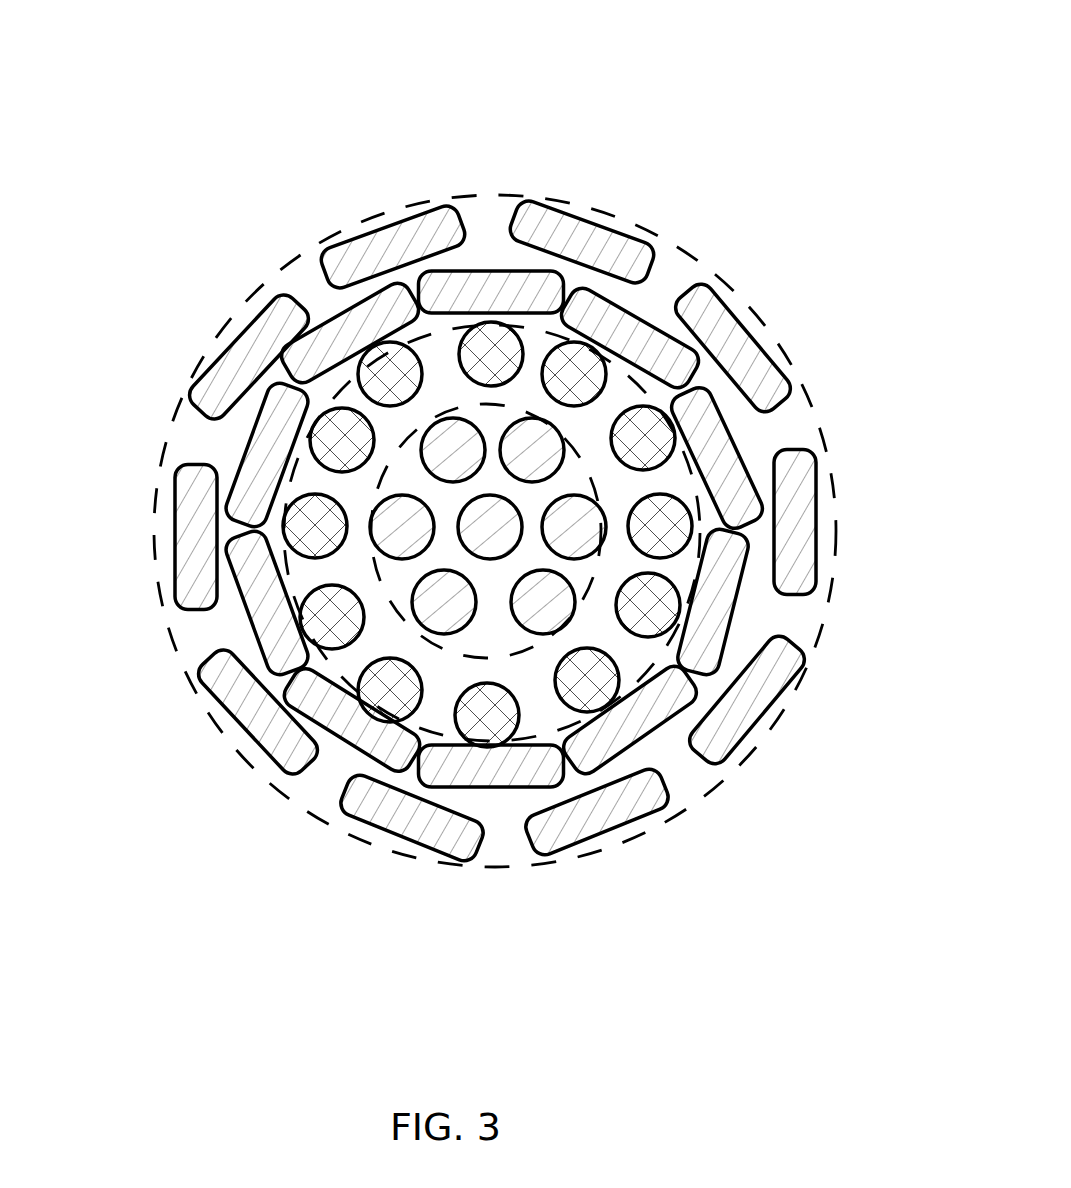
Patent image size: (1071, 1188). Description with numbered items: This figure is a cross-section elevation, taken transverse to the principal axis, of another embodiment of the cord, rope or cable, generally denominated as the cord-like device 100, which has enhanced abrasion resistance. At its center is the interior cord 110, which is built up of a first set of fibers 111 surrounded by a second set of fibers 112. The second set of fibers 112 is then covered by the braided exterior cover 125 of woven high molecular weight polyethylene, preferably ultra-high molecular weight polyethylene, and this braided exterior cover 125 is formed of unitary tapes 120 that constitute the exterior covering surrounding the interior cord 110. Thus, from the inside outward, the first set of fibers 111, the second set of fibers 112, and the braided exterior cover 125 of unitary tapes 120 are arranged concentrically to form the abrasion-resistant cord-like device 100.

The cord-like device 100 is at (380, 131).
The exterior covering 120 is at (500, 152).
The braided exterior cover 125 is at (176, 540).
The interior cord 110 is at (733, 506).
The first set of fibers 111 is at (488, 404).
The second set of fibers 112 is at (488, 659).